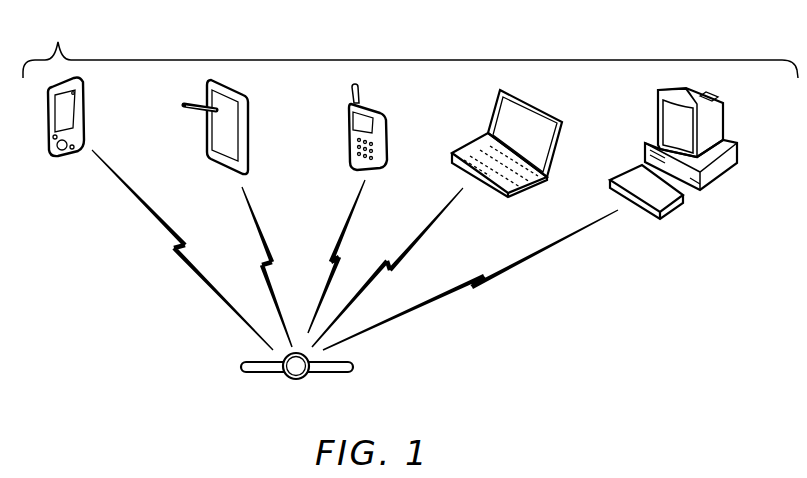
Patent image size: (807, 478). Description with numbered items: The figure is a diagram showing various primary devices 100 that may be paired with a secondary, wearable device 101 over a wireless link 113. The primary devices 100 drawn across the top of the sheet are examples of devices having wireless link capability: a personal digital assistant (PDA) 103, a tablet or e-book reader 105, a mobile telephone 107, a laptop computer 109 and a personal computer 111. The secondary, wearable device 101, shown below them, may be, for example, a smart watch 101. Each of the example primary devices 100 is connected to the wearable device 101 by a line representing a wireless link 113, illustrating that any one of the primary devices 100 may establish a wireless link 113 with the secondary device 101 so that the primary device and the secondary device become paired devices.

The primary devices 100 is at (73, 38).
The secondary, wearable device 101 is at (306, 378).
The personal digital assistant (PDA) 103 is at (87, 111).
The tablet or e-book reader 105 is at (250, 128).
The mobile telephone 107 is at (387, 132).
The laptop computer 109 is at (548, 113).
The personal computer 111 is at (723, 103).
The wireless link 113 is at (488, 282).